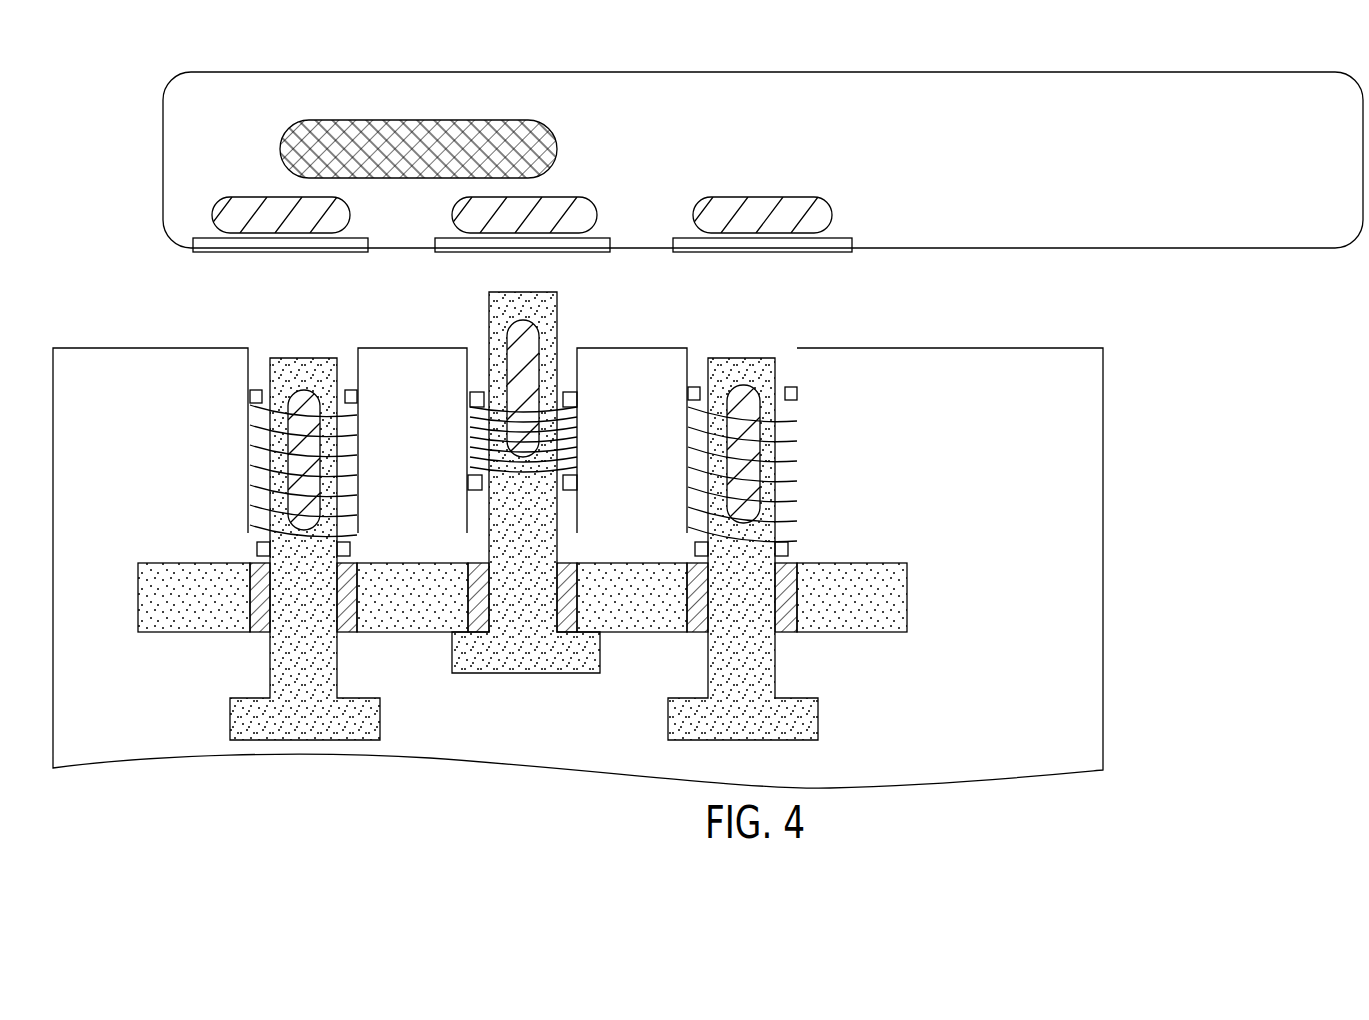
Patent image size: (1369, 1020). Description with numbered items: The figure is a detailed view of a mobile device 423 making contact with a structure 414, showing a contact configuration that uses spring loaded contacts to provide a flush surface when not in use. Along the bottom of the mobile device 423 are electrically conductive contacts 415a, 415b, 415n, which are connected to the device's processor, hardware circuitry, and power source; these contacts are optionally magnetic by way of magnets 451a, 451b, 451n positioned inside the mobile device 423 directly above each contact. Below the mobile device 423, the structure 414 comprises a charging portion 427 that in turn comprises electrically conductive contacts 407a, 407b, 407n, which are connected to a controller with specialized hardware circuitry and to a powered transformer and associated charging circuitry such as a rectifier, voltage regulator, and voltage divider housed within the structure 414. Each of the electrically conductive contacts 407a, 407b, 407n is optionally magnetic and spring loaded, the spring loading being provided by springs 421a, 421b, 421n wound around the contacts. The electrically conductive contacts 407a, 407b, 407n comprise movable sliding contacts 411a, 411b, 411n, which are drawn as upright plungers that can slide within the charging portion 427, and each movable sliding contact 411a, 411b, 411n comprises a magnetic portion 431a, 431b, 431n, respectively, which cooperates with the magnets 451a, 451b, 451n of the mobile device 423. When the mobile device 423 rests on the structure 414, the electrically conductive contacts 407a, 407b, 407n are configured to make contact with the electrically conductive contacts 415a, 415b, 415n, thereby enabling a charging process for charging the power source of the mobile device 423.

The mobile device 423 is at (702, 90).
The magnet 451a is at (248, 198).
The magnet 451b is at (570, 198).
The magnet 451n is at (797, 197).
The electrically conductive contact 415a is at (208, 252).
The electrically conductive contact 415b is at (595, 252).
The electrically conductive contact 415n is at (735, 252).
The structure 414 is at (1019, 588).
The charging portion 427 is at (168, 496).
The electrically conductive contact 407a is at (294, 525).
The electrically conductive contact 407b is at (511, 467).
The electrically conductive contact 407n is at (779, 525).
The movable contact 411a is at (305, 525).
The movable contact 411b is at (510, 467).
The movable contact 411n is at (743, 525).
The magnetic portion 431a is at (304, 395).
The magnetic portion 431b is at (530, 328).
The magnetic portion 431n is at (727, 392).
The spring 421a is at (352, 484).
The spring 421b is at (572, 455).
The spring 421n is at (793, 482).